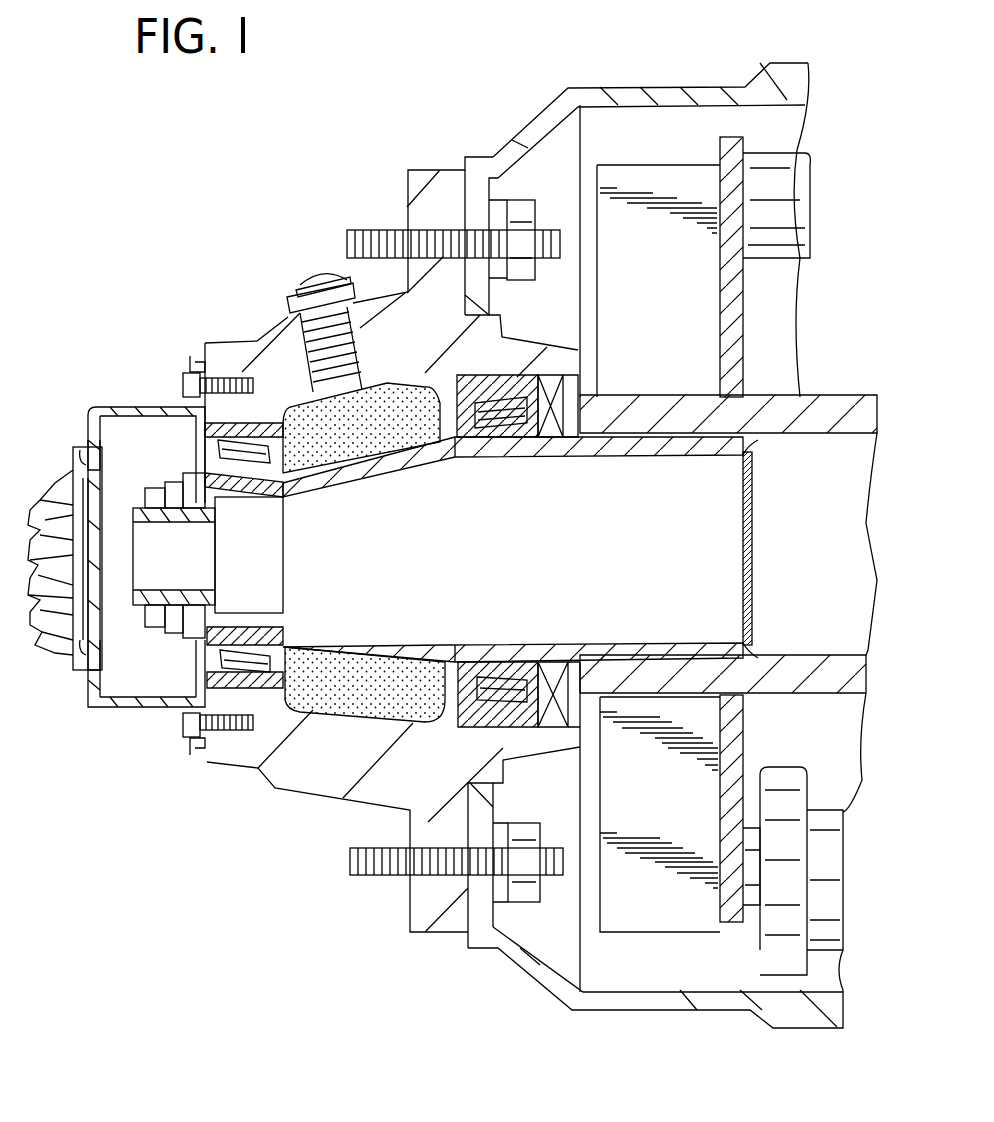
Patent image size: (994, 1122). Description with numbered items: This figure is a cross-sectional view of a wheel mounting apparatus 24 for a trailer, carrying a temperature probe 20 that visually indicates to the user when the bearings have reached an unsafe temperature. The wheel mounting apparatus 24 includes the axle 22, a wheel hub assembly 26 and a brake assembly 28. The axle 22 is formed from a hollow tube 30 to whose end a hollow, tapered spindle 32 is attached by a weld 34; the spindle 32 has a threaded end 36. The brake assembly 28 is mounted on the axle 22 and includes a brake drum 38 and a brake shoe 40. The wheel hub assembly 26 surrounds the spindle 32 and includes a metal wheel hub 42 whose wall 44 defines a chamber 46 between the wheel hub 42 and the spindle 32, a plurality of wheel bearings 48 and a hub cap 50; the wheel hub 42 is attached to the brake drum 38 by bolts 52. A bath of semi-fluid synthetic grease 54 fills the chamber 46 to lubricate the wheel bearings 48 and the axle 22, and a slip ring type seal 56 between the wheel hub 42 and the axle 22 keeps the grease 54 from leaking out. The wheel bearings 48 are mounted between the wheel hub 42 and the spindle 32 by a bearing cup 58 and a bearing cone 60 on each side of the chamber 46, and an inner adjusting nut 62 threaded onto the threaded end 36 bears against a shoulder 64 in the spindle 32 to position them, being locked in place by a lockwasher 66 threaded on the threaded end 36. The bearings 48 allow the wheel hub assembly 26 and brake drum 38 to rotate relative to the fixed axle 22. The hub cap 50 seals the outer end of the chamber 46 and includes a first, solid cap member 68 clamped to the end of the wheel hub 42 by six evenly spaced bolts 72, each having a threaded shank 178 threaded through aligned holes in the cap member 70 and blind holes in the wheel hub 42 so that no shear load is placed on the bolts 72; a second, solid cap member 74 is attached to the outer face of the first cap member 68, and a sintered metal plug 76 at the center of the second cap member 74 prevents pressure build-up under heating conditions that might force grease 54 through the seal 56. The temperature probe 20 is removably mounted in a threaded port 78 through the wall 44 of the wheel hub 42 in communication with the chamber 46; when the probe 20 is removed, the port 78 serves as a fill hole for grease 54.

The temperature probe 20 is at (312, 268).
The axle 22 is at (814, 393).
The wheel mounting apparatus 24 is at (410, 58).
The wheel hub assembly 26 is at (295, 792).
The brake assembly 28 is at (830, 765).
The hollow tube 30 is at (850, 685).
The spindle 32 is at (666, 643).
The weld 34 is at (752, 600).
The threaded end 36 is at (148, 522).
The brake drum 38 is at (700, 87).
The brake shoe 40 is at (668, 175).
The wheel hub 42 is at (252, 345).
The wall 44 is at (430, 370).
The chamber 46 is at (380, 455).
The wheel bearings 48 is at (254, 478).
The hub cap 50 is at (86, 712).
The bolts 52 is at (378, 232).
The semi-fluid synthetic grease 54 is at (312, 410).
The slip ring type seal 56 is at (570, 398).
The bearing cup 58 is at (208, 682).
The bearing cone 60 is at (225, 640).
The inner adjusting nut 62 is at (194, 475).
The shoulder 64 is at (215, 505).
The lockwasher 66 is at (172, 485).
The first cap member 68 is at (155, 495).
The cap member 70 is at (152, 710).
The bolts 72 is at (186, 385).
The second cap member 74 is at (60, 490).
The sintered metal plug 76 is at (35, 612).
The port 78 is at (348, 335).
The threaded shank 178 is at (215, 375).